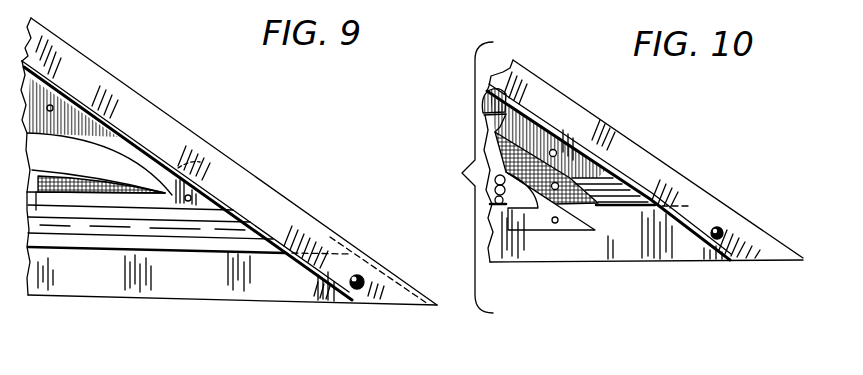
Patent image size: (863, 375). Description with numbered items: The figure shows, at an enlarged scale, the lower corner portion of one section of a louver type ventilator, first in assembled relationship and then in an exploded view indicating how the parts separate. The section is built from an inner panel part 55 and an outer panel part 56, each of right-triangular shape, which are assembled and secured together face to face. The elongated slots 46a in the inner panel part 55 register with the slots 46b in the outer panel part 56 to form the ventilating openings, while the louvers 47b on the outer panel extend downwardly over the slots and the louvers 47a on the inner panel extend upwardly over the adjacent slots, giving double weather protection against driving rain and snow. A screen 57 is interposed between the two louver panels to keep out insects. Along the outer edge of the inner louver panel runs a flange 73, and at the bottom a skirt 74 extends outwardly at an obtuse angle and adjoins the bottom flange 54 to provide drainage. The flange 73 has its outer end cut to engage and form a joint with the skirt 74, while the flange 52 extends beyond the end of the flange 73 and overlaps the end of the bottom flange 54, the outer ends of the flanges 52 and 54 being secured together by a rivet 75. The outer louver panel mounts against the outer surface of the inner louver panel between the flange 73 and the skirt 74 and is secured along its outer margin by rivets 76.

In FIG. 10, the elongated slots 46a is at (498, 86).
In FIG. 9, the slots 46b is at (83, 182).
In FIG. 10, the louvers 47a is at (490, 129).
In FIG. 9, the louvers 47b is at (107, 157).
In FIG. 10, the louvers 47b is at (486, 192).
In FIG. 9, the flange 52 is at (218, 178).
In FIG. 9, the bottom flange 54 is at (155, 280).
In FIG. 10, the inner panel part 55 is at (633, 134).
In FIG. 9, the outer panel part 56 is at (135, 202).
In FIG. 10, the outer panel part 56 is at (570, 237).
In FIG. 10, the screen 57 is at (538, 120).
In FIG. 9, the flange 73 is at (201, 150).
In FIG. 10, the flange 73 is at (648, 172).
In FIG. 9, the skirt 74 is at (203, 236).
In FIG. 10, the skirt 74 is at (626, 207).
In FIG. 9, the rivet 75 is at (363, 276).
In FIG. 10, the rivet 75 is at (722, 229).
In FIG. 9, the rivets 76 is at (53, 106).